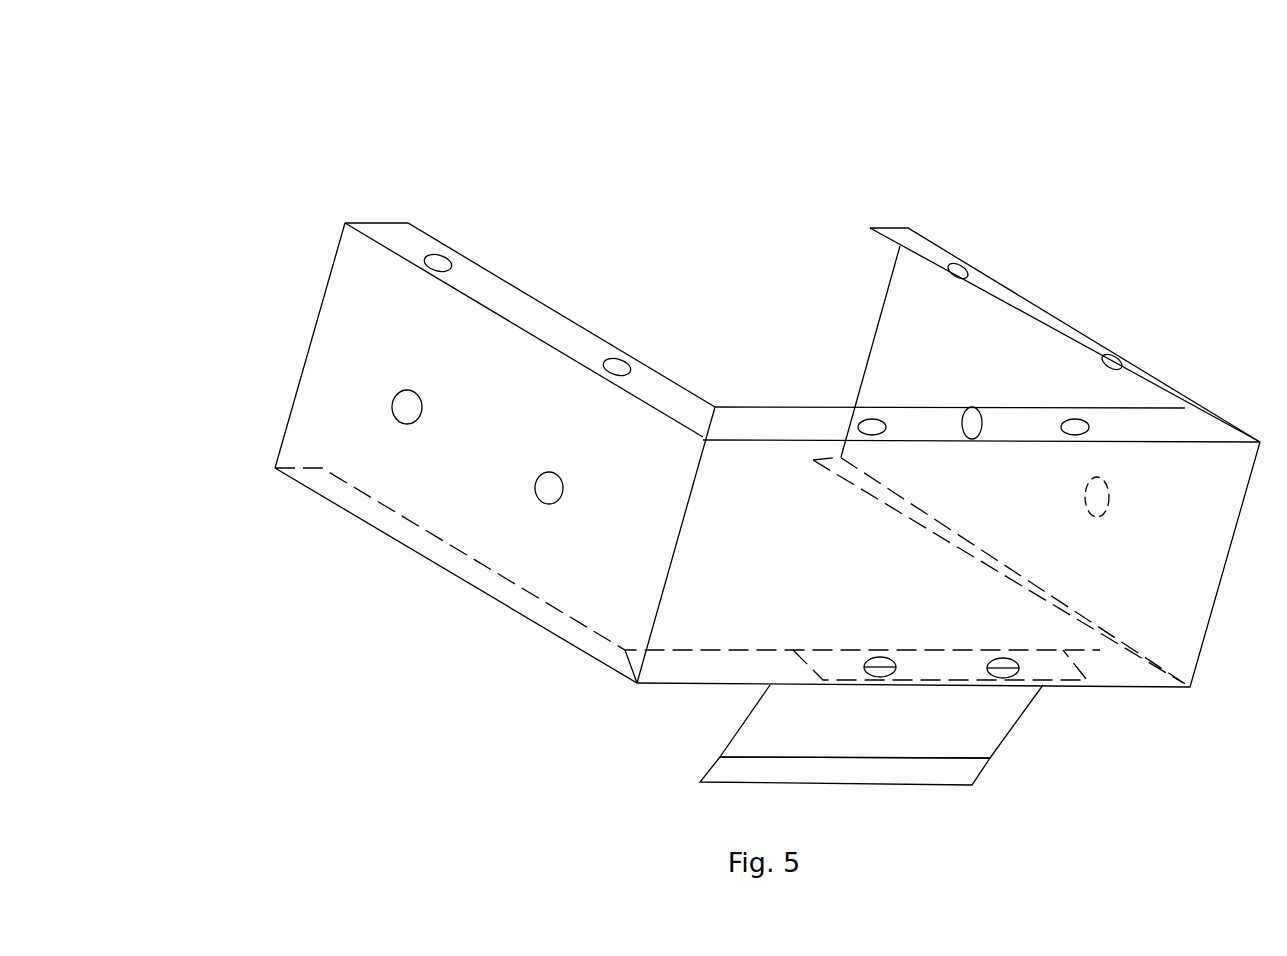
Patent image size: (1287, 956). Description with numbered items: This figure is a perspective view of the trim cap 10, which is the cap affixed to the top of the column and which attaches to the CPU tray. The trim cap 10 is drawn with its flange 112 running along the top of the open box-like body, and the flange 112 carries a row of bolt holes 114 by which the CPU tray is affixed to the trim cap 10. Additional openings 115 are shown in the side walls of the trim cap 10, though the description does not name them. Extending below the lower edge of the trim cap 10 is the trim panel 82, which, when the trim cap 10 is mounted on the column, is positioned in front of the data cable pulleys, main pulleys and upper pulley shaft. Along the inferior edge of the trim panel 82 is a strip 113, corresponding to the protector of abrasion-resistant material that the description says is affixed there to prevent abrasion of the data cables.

The trim cap 10 is at (318, 287).
The flange 112 is at (408, 223).
The bolt holes 114 is at (1102, 358).
The wall apertures 115 is at (1106, 480).
The trim panel 82 is at (1007, 742).
The mounting bar 113 is at (947, 772).